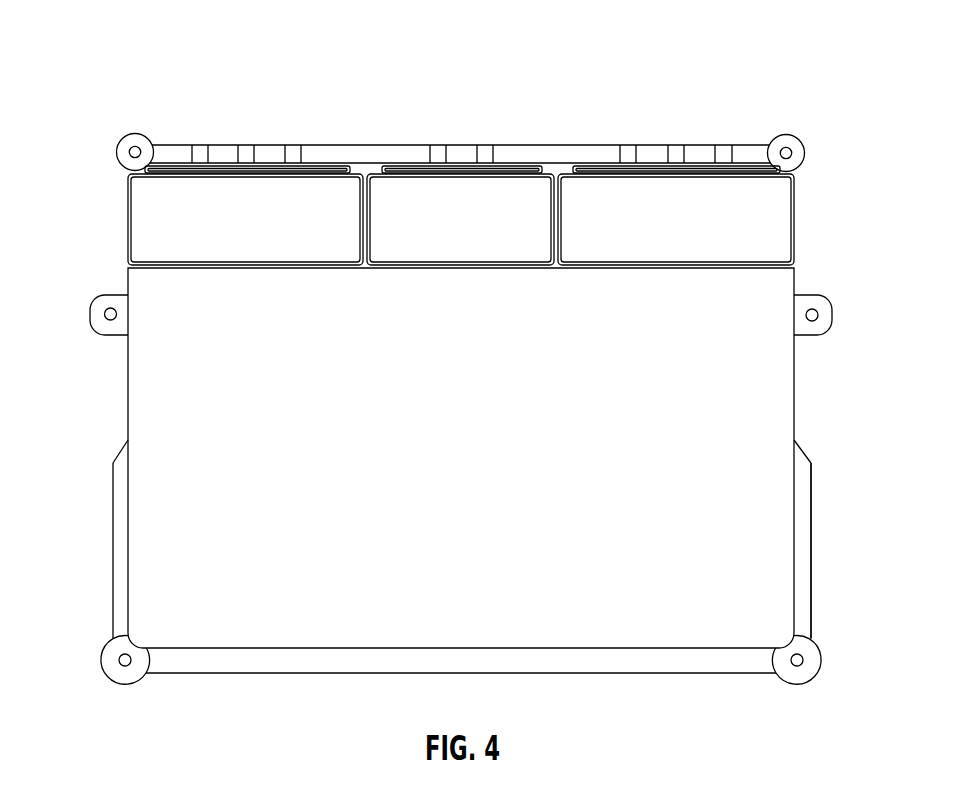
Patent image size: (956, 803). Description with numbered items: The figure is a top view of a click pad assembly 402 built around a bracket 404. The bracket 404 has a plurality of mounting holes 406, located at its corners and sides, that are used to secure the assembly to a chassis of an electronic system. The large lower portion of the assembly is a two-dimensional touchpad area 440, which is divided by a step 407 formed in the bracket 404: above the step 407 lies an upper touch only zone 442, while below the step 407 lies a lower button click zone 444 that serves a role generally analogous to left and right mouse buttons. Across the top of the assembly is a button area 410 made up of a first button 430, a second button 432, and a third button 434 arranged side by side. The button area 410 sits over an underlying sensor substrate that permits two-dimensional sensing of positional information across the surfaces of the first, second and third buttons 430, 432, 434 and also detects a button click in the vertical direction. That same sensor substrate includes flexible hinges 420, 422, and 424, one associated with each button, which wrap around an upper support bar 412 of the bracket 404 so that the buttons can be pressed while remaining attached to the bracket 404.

The click pad assembly 402 is at (98, 54).
The bracket 404 is at (113, 589).
The mounting holes 406 is at (117, 673).
The step 407 is at (127, 492).
The button area 410 is at (125, 172).
The upper support bar 412 is at (172, 146).
The flexible hinge 420 is at (302, 138).
The flexible hinge 422 is at (493, 138).
The flexible hinge 424 is at (733, 138).
The first button 430 is at (293, 215).
The second button 432 is at (485, 212).
The third button 434 is at (635, 208).
The two-dimensional touchpad area 440 is at (832, 270).
The touch only zone 442 is at (482, 378).
The button click zone 444 is at (482, 587).